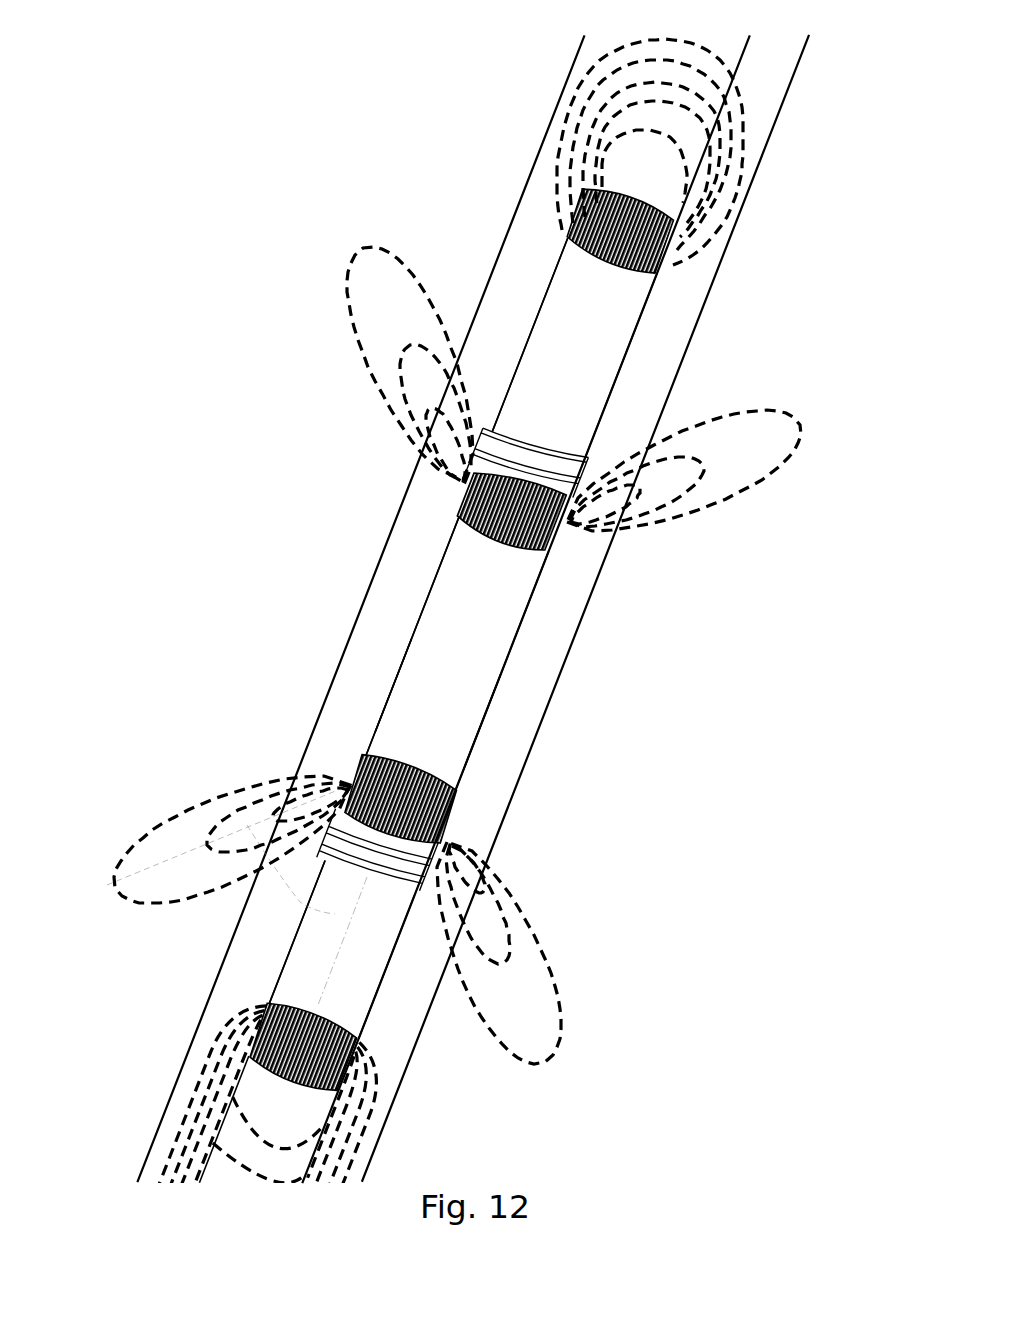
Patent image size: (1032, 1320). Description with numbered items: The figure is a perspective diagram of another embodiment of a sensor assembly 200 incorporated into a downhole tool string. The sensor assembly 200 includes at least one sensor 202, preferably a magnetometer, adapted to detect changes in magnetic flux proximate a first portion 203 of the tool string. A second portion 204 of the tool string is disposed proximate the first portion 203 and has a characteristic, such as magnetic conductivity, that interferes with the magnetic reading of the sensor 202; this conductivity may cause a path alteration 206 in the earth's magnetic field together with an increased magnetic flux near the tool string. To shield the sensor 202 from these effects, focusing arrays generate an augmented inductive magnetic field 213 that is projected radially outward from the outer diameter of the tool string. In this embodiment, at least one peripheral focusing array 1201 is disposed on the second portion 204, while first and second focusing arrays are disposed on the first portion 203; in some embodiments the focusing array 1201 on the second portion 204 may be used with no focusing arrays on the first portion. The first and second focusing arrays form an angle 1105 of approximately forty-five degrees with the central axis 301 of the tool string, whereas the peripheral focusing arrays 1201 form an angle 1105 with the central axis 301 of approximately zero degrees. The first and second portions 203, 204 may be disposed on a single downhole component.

The sensor assembly 200 is at (97, 155).
The peripheral focusing array 1201 is at (582, 268).
The path alteration 206 is at (615, 348).
The augmented inductive magnetic field 213 is at (764, 167).
The sensor 202 is at (500, 642).
The first portion 203 is at (460, 717).
The second portion 204 is at (310, 950).
The central axis 301 is at (365, 975).
The angle 1105 is at (267, 892).